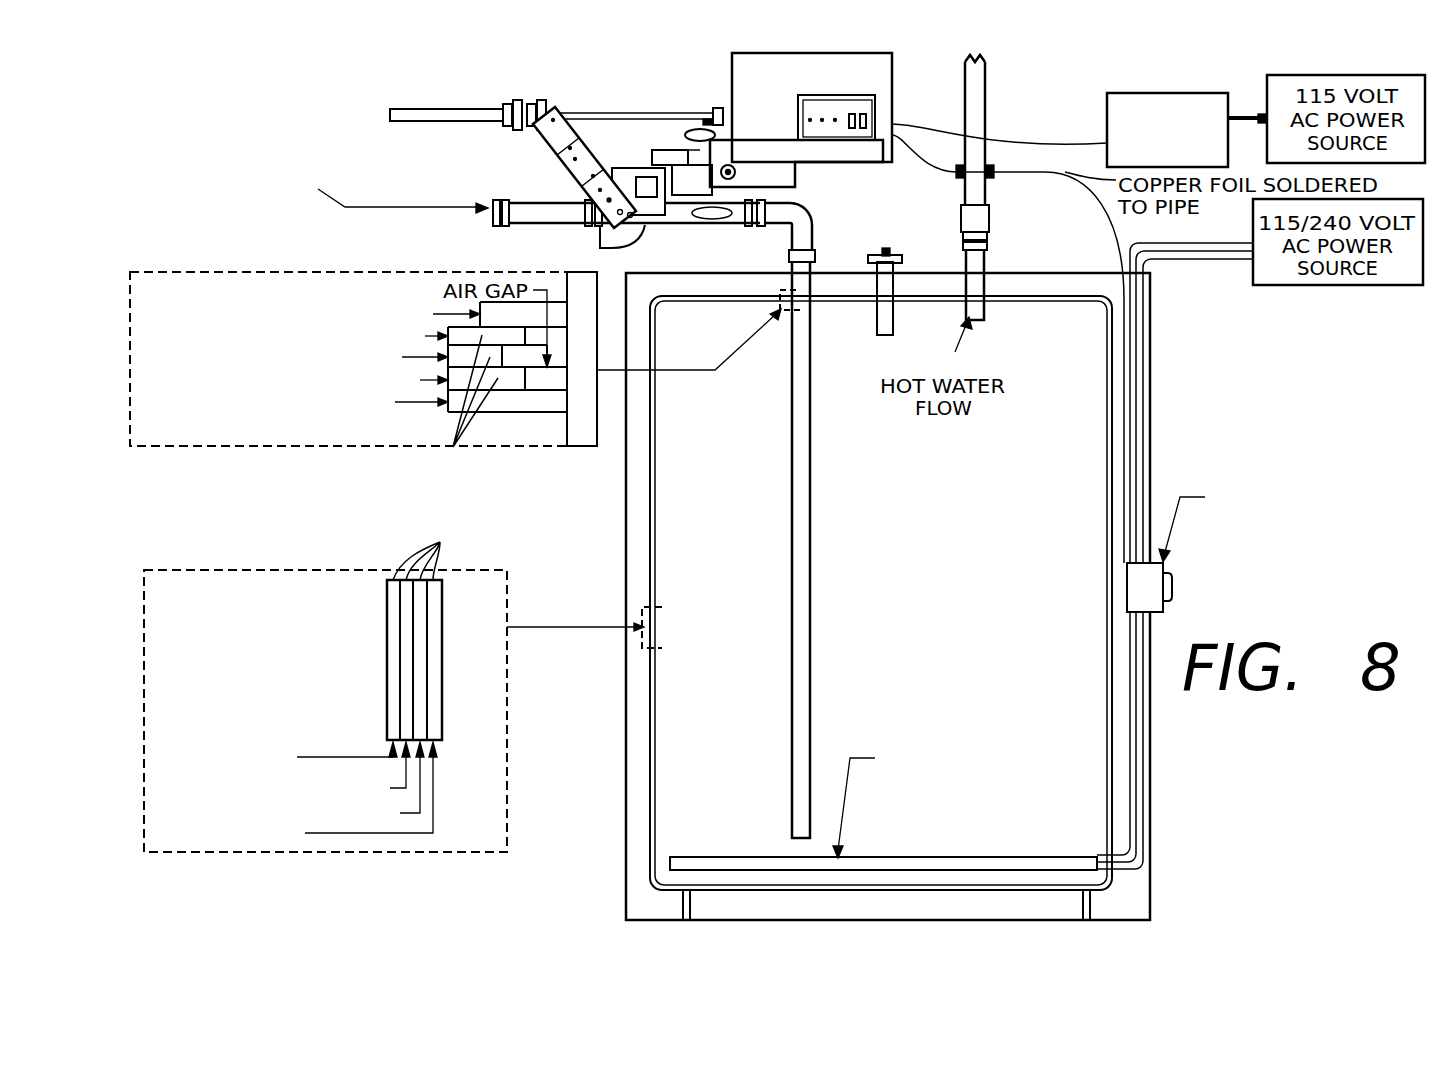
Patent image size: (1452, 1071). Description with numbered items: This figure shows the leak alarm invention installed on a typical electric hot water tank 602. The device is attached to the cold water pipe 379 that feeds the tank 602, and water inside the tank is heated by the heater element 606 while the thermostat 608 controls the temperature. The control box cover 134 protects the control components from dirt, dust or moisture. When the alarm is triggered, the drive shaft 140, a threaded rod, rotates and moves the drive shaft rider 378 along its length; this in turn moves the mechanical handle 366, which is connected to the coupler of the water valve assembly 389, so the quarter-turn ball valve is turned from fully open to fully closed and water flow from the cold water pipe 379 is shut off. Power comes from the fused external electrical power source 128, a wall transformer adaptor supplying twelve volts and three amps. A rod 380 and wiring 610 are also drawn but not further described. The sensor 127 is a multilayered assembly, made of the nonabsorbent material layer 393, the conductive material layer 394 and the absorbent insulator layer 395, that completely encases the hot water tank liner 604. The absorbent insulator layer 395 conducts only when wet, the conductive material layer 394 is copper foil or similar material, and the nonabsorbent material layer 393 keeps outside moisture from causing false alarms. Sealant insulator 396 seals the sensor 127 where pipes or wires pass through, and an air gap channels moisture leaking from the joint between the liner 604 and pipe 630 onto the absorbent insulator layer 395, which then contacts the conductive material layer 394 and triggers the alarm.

The sensor 127 is at (453, 447).
The fused external electrical power source 128 is at (1118, 101).
The control box cover 134 is at (731, 86).
The drive shaft 140 is at (648, 113).
The mechanical handle 366 is at (553, 172).
The drive shaft rider 378 is at (539, 100).
The cold water pipe 379 is at (507, 223).
The rod 380 is at (407, 108).
The water valve assembly 389 is at (620, 170).
The nonabsorbent material layer 393 is at (172, 320).
The conductive material layer 394 is at (165, 363).
The absorbent insulator layer 395 is at (215, 385).
The sealant insulator 396 is at (365, 300).
The hot water tank 602 is at (626, 565).
The hot water tank liner 604 is at (302, 412).
The heater element 606 is at (956, 858).
The thermostat 608 is at (1174, 575).
The wire 610 is at (993, 140).
The pipe 630 is at (592, 441).